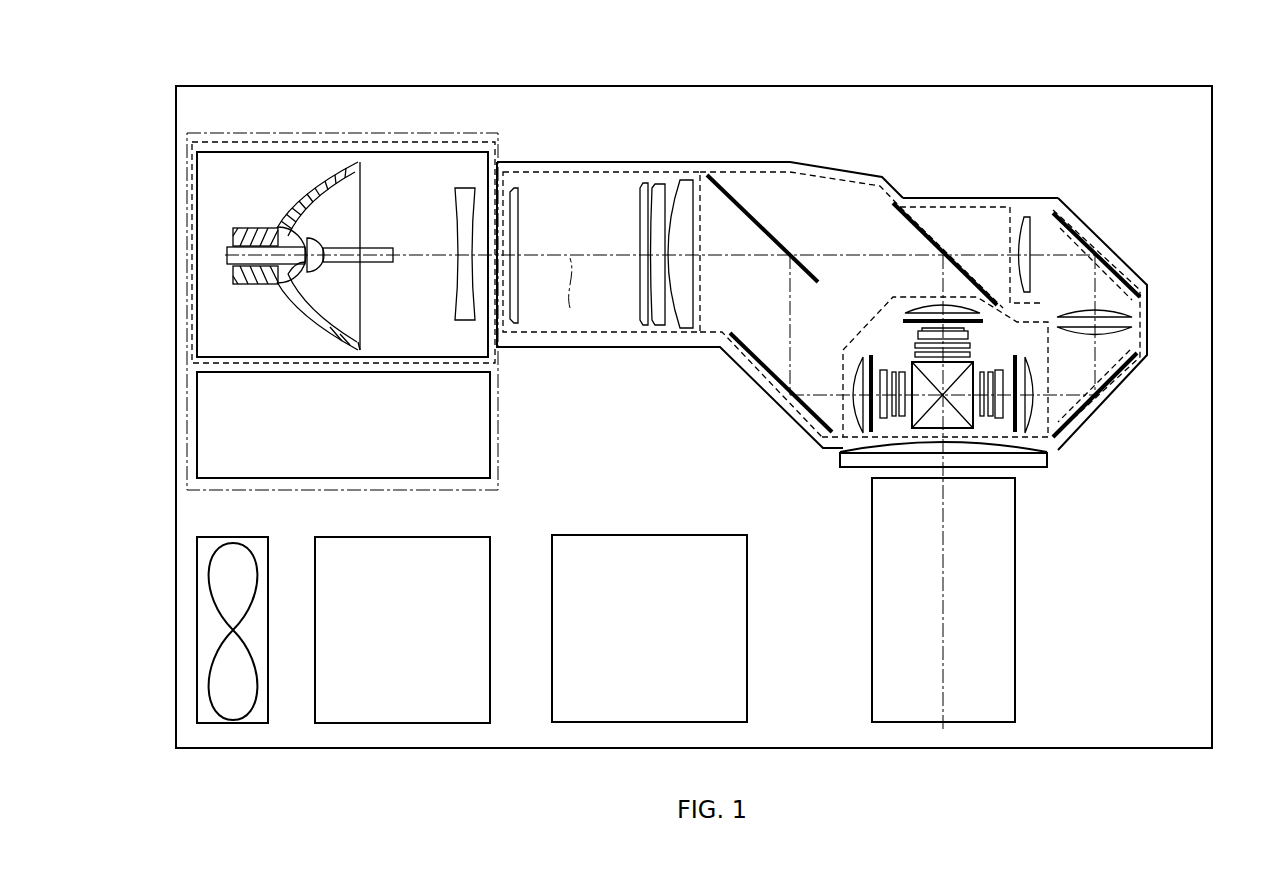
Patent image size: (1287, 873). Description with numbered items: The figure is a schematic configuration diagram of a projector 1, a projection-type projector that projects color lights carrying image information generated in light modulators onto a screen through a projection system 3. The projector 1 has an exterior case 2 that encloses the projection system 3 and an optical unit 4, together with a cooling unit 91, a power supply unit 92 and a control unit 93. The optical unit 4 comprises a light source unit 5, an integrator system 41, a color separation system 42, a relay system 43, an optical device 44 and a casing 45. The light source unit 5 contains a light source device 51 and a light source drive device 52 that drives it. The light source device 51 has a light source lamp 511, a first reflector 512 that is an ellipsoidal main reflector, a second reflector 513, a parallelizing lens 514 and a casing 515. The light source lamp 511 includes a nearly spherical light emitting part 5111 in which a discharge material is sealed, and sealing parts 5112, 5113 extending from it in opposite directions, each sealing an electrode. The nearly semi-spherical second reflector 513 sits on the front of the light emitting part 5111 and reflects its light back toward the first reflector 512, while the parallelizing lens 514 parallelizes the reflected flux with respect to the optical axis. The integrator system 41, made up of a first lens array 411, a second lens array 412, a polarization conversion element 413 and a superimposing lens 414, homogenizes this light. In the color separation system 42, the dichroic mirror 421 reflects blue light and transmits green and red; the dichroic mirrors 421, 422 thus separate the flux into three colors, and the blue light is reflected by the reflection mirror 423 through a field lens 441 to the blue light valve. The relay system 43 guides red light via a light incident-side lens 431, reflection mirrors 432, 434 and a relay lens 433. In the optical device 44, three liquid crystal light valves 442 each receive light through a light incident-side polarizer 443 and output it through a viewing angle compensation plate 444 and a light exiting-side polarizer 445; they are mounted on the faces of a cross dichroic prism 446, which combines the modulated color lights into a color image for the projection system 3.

The projector 1 is at (1000, 60).
The exterior case 2 is at (1212, 190).
The projection system 3 is at (1015, 612).
The optical unit 4 is at (1132, 118).
The light source unit 5 is at (240, 133).
The integrator system 41 is at (653, 172).
The color separation system 42 is at (840, 166).
The relay system 43 is at (1092, 222).
The optical device 44 is at (1030, 312).
The casing 45 is at (960, 198).
The light source device 51 is at (483, 140).
The light source drive device 52 is at (490, 430).
The cooling unit 91 is at (245, 537).
The power supply unit 92 is at (480, 537).
The control unit 93 is at (690, 535).
The first lens array 411 is at (518, 220).
The second lens array 412 is at (640, 195).
The polarization conversion element 413 is at (664, 190).
The superimposing lens 414 is at (690, 210).
The dichroic mirror 421 is at (760, 215).
The dichroic mirror 422 is at (935, 232).
The reflection mirror 423 is at (742, 340).
The light incident-side lens 431 is at (1026, 222).
The reflection mirror 432 is at (1112, 262).
The relay lens 433 is at (1138, 318).
The reflection mirror 434 is at (1122, 380).
The field lens 441 is at (940, 306).
The liquid crystal light valve 442 is at (1067, 512).
The light incident-side polarizer 443 is at (905, 320).
The viewing angle compensation plate 444 is at (916, 345).
The light exiting-side polarizer 445 is at (973, 354).
The cross dichroic prism 446 is at (952, 422).
The light source lamp 511 is at (320, 182).
The first reflector 512 is at (340, 162).
The second reflector 513 is at (313, 278).
The parallelizing lens 514 is at (470, 188).
The casing 515 is at (405, 152).
The light emitting part 5111 is at (303, 232).
The sealing part 5112 is at (248, 262).
The sealing part 5113 is at (383, 248).